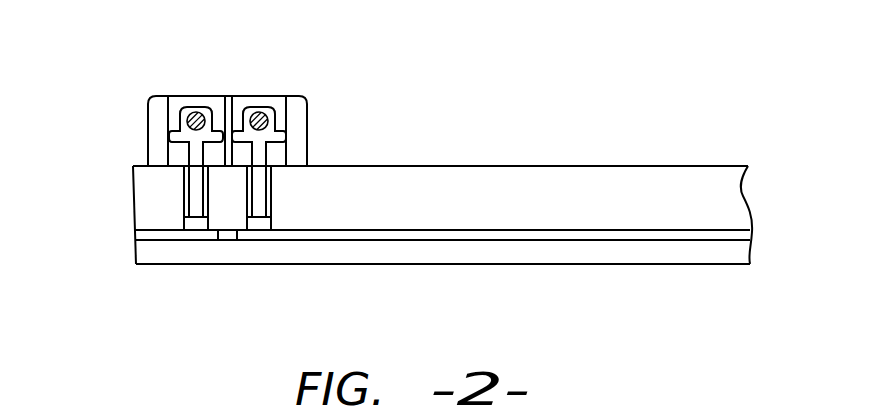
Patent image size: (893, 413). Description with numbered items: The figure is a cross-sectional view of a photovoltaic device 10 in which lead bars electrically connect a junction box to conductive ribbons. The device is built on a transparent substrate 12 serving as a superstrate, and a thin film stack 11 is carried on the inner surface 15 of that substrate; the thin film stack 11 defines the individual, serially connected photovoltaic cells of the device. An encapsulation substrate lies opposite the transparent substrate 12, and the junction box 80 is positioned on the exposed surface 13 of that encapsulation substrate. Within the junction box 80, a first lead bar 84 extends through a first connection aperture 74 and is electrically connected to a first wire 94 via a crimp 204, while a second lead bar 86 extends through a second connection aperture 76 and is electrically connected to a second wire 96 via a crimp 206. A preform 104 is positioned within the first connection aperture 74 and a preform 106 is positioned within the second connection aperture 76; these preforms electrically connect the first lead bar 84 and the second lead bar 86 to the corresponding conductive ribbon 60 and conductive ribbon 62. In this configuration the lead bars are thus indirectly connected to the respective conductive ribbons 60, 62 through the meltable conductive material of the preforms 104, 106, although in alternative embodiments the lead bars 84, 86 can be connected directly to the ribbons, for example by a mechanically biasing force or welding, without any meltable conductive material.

The shelf assembly 10 is at (608, 38).
The thin film stack 11 is at (565, 249).
The transparent substrate 12 is at (670, 182).
The exposed surface 13 is at (603, 160).
The inner surface 15 is at (446, 232).
The conductive ribbon 60 is at (505, 235).
The conductive ribbon 62 is at (165, 232).
The first connection aperture 74 is at (290, 193).
The second connection aperture 76 is at (169, 198).
The junction box 80 is at (307, 118).
The first lead bar 84 is at (298, 153).
The second lead bar 86 is at (181, 174).
The first wire 94 is at (259, 110).
The second wire 96 is at (193, 108).
The preform 104 is at (260, 222).
The preform 106 is at (197, 222).
The crimp 204 is at (303, 118).
The crimp 206 is at (177, 129).